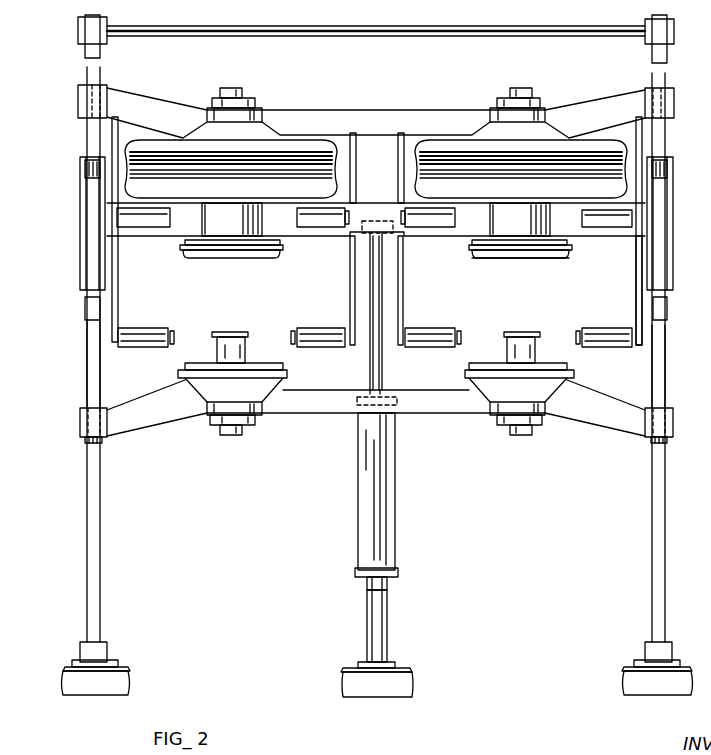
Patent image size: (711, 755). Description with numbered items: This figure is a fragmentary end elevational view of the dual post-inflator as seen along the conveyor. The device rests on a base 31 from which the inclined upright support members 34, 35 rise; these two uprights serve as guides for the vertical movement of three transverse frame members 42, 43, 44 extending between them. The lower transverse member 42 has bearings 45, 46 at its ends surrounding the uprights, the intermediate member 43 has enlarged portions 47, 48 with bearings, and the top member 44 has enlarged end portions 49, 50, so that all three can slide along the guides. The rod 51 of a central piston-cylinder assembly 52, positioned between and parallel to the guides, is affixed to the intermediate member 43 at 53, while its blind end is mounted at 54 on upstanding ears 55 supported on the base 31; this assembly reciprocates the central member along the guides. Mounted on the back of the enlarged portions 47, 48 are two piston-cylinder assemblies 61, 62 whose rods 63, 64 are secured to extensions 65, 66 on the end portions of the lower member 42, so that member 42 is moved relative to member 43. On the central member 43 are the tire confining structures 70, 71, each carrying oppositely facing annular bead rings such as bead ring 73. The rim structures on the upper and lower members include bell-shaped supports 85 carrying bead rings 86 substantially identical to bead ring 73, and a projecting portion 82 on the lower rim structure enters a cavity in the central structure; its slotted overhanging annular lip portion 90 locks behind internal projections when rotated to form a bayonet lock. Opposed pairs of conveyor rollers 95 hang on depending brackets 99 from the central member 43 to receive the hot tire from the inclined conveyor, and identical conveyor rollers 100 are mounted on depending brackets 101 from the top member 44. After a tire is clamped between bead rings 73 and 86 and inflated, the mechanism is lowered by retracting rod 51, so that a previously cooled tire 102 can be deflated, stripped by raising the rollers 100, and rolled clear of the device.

The base 31 is at (398, 687).
The upright support member 34 is at (93, 595).
The upright support member 35 is at (660, 545).
The transverse frame member 42 is at (447, 408).
The transverse frame member 43 is at (463, 230).
The transverse frame member 44 is at (420, 120).
The bearing 45 is at (85, 437).
The bearing 46 is at (672, 443).
The enlarged portion 47 is at (90, 236).
The enlarged portion 48 is at (672, 237).
The enlarged end portion 49 is at (106, 88).
The enlarged end portion 50 is at (670, 96).
The rod 51 is at (382, 370).
The piston-cylinder assembly 52 is at (382, 525).
The rod attachment 53 is at (375, 222).
The blind end mounting 54 is at (387, 585).
The upstanding ears 55 is at (387, 630).
The piston-cylinder assembly 61 is at (93, 270).
The piston-cylinder assembly 62 is at (668, 297).
The rod 63 is at (93, 372).
The rod 64 is at (655, 378).
The extension 65 is at (104, 437).
The extension 66 is at (647, 440).
The tire confining structure 70 is at (292, 243).
The tire confining structure 71 is at (577, 244).
The bead ring 73 is at (562, 262).
The projecting portion 82 is at (243, 353).
The bell-shaped support 85 is at (253, 134).
The bead ring 86 is at (570, 373).
The annular lip portion 90 is at (537, 333).
The conveyor rollers 95 is at (148, 334).
The depending brackets 99 is at (117, 288).
The conveyor rollers 100 is at (432, 226).
The depending brackets 101 is at (352, 170).
The tire 102 is at (593, 152).